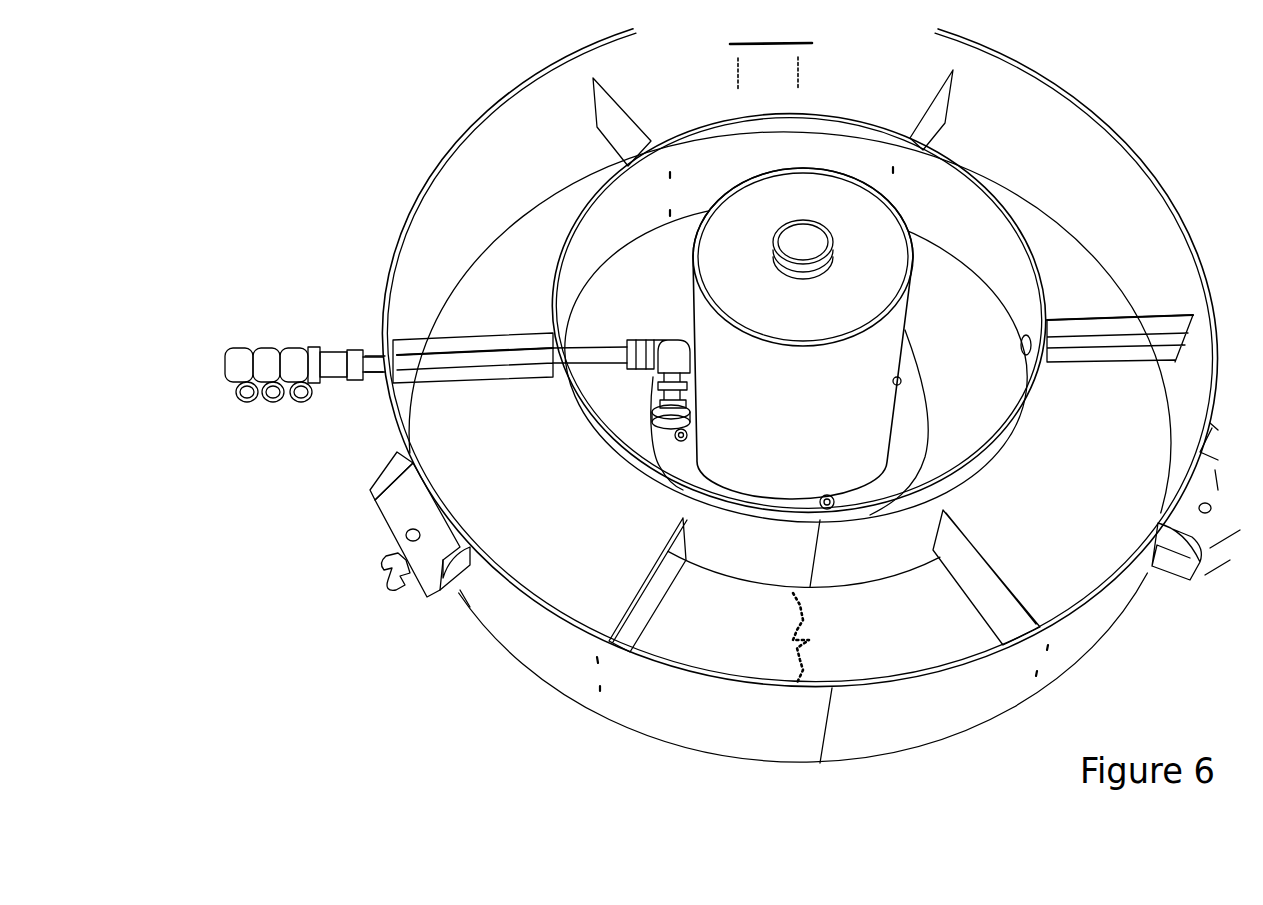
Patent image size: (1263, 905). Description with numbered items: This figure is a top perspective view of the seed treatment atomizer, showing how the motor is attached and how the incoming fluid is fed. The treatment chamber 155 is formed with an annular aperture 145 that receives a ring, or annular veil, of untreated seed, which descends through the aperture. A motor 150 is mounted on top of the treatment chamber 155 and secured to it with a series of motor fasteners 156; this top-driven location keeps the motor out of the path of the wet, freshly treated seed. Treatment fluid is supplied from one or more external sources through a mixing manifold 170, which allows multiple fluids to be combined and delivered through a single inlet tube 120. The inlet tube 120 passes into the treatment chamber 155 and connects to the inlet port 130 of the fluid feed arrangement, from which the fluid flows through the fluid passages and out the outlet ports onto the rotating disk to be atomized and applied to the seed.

The treatment chamber 155 is at (388, 230).
The motor 150 is at (906, 335).
The motor fasteners 156 is at (846, 492).
The inlet tube 120 is at (603, 368).
The inlet port 130 is at (638, 421).
The mixing manifold 170 is at (267, 423).
The annular aperture 145 is at (821, 638).